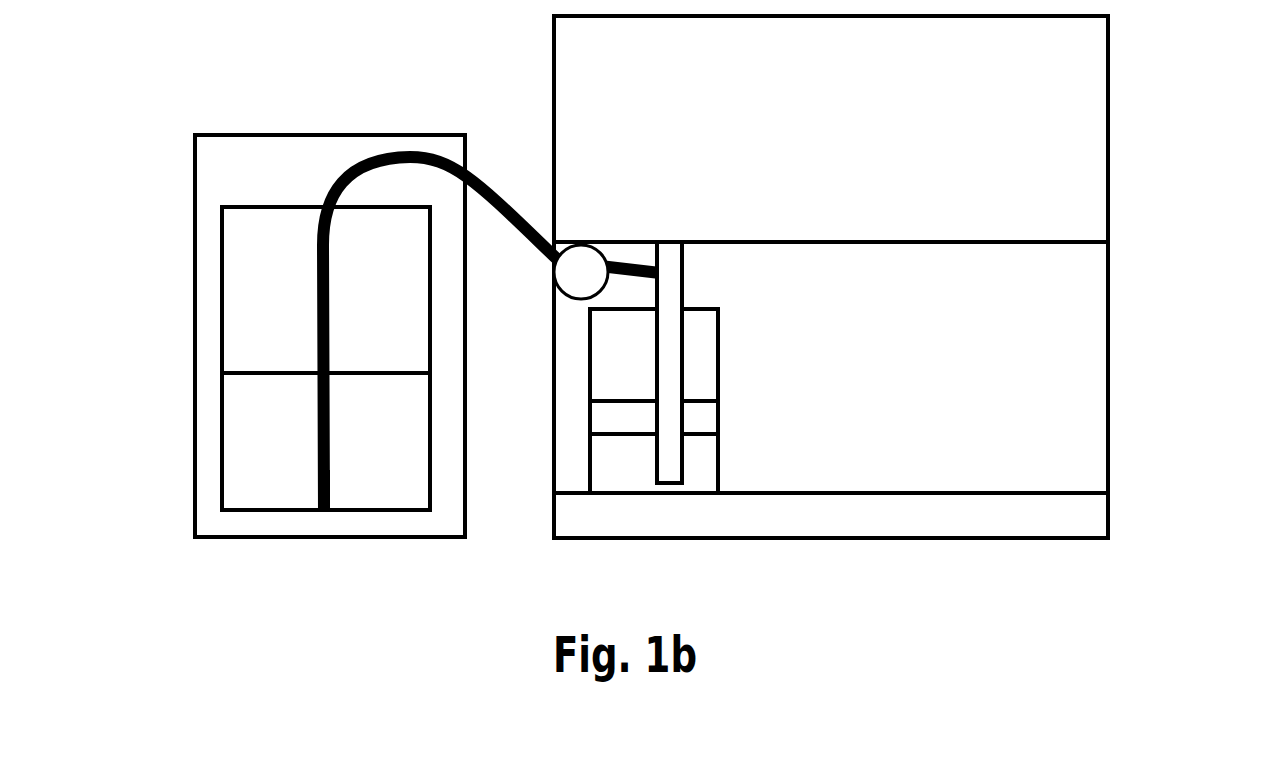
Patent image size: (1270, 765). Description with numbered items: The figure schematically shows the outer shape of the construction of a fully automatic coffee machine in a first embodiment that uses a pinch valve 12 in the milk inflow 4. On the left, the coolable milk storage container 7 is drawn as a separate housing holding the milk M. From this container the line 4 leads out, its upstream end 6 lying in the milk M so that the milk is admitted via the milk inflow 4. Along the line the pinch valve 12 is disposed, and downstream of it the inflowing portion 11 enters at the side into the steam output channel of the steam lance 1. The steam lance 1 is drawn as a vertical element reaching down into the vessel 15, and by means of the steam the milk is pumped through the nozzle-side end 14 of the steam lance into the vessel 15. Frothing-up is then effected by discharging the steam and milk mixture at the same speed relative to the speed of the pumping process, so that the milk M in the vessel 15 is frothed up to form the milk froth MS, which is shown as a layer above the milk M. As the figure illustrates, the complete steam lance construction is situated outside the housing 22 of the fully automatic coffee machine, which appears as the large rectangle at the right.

The steam lance 1 is at (672, 288).
The milk inflow 4 is at (497, 197).
The upstream end of the line 6 is at (331, 481).
The coolable milk storage container 7 is at (288, 160).
The downstream inflowing portion 11 is at (631, 262).
The pinch valve 12 is at (581, 272).
The nozzle-side end of the steam lance 14 is at (669, 466).
The vessel 15 is at (718, 336).
The housing of the fully automatic coffee machine 22 is at (1078, 102).
The milk M is at (395, 418).
The milk froth MS is at (710, 419).